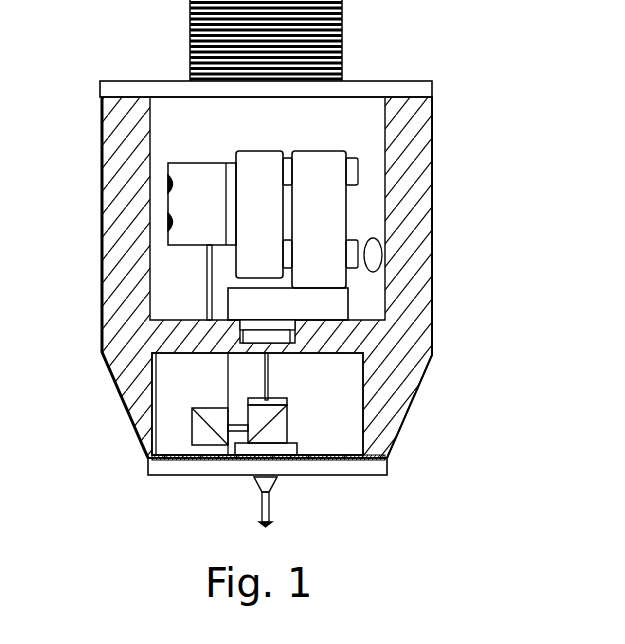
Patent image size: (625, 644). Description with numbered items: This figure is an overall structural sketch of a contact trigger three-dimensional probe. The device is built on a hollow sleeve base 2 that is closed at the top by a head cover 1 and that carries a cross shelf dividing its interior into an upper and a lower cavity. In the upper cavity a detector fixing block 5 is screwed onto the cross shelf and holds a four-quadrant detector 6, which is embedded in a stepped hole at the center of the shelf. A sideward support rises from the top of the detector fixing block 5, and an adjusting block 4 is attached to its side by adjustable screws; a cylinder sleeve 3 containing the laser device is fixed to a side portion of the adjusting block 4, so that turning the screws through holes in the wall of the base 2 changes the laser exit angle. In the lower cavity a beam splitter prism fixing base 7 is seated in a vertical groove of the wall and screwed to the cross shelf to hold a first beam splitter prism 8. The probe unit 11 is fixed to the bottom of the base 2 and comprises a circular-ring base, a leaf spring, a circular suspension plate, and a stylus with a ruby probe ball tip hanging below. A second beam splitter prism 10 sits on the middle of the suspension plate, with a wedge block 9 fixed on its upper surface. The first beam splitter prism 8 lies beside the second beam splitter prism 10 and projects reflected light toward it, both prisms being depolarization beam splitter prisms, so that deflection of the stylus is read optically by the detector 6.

The head cover 1 is at (378, 87).
The base 2 is at (410, 133).
The cylinder sleeve 3 is at (187, 203).
The adjusting block 4 is at (252, 262).
The detector fixing block 5 is at (292, 298).
The four-quadrant detector 6 is at (255, 337).
The beam splitter prism fixing base 7 is at (165, 378).
The first beam splitter prism 8 is at (212, 435).
The wedge block 9 is at (287, 403).
The second beam splitter prism 10 is at (252, 430).
The probe unit 11 is at (337, 467).